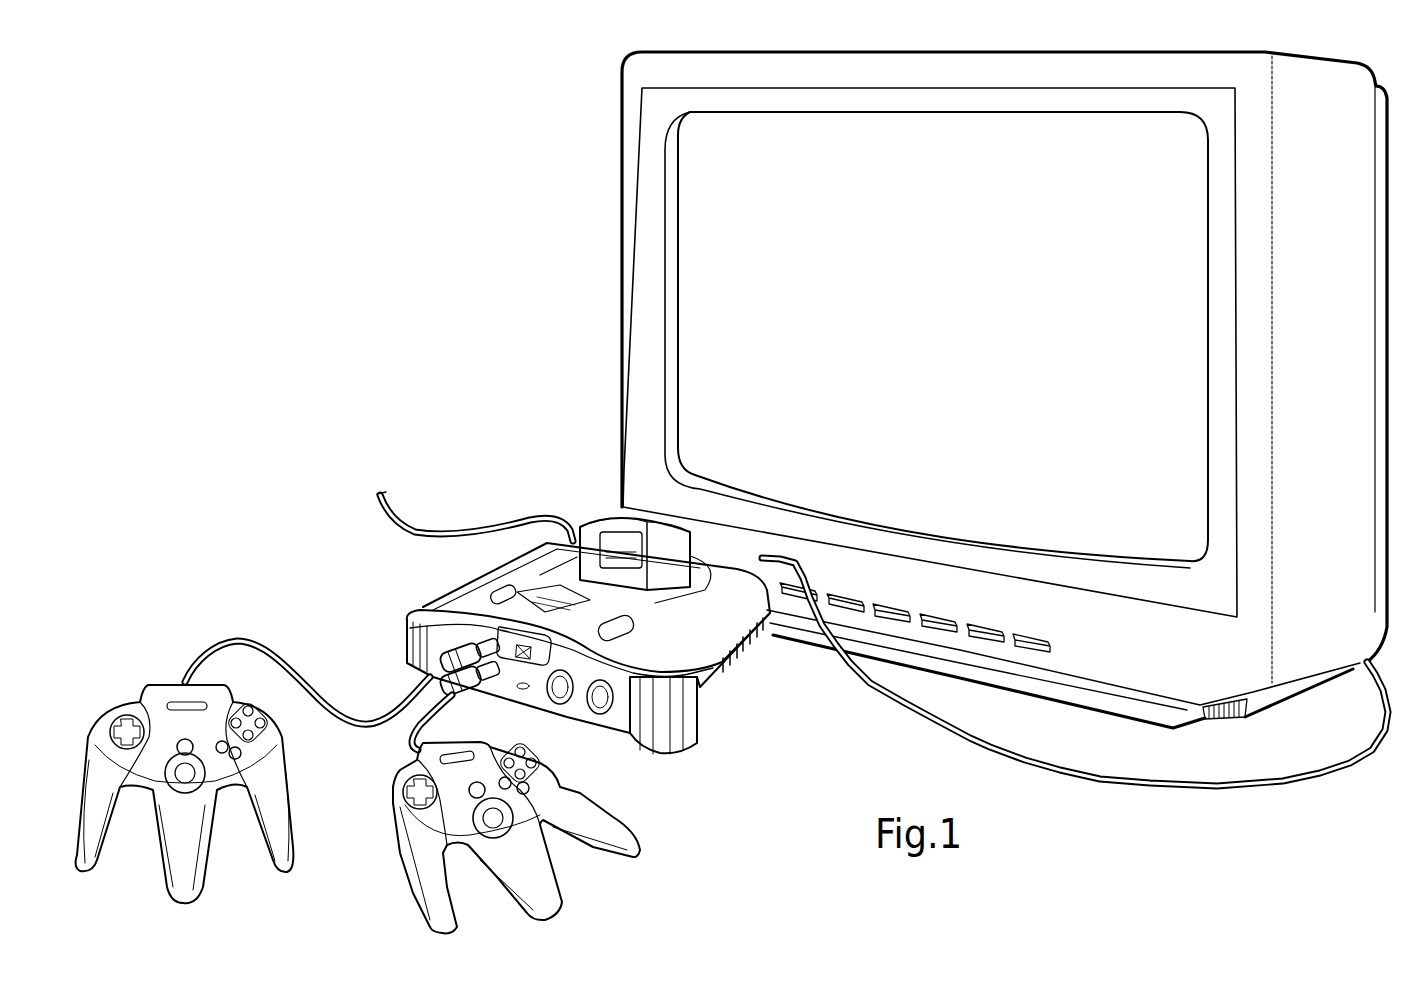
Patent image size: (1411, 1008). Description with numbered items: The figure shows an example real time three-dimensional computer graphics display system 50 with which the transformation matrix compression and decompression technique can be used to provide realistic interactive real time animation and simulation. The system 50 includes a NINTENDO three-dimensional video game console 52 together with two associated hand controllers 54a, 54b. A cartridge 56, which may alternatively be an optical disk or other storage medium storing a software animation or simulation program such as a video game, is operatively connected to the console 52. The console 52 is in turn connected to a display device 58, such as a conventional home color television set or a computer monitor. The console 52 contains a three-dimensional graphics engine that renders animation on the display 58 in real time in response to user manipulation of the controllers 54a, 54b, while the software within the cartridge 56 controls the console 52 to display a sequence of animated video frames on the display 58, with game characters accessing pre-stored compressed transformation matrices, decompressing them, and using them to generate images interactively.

The real time 3-D computer graphics display system 50 is at (423, 661).
The 3-D video game console 52 is at (693, 758).
The hand controller 54a is at (187, 893).
The hand controller 54b is at (560, 903).
The cartridge 56 is at (593, 530).
The display device 58 is at (1390, 630).